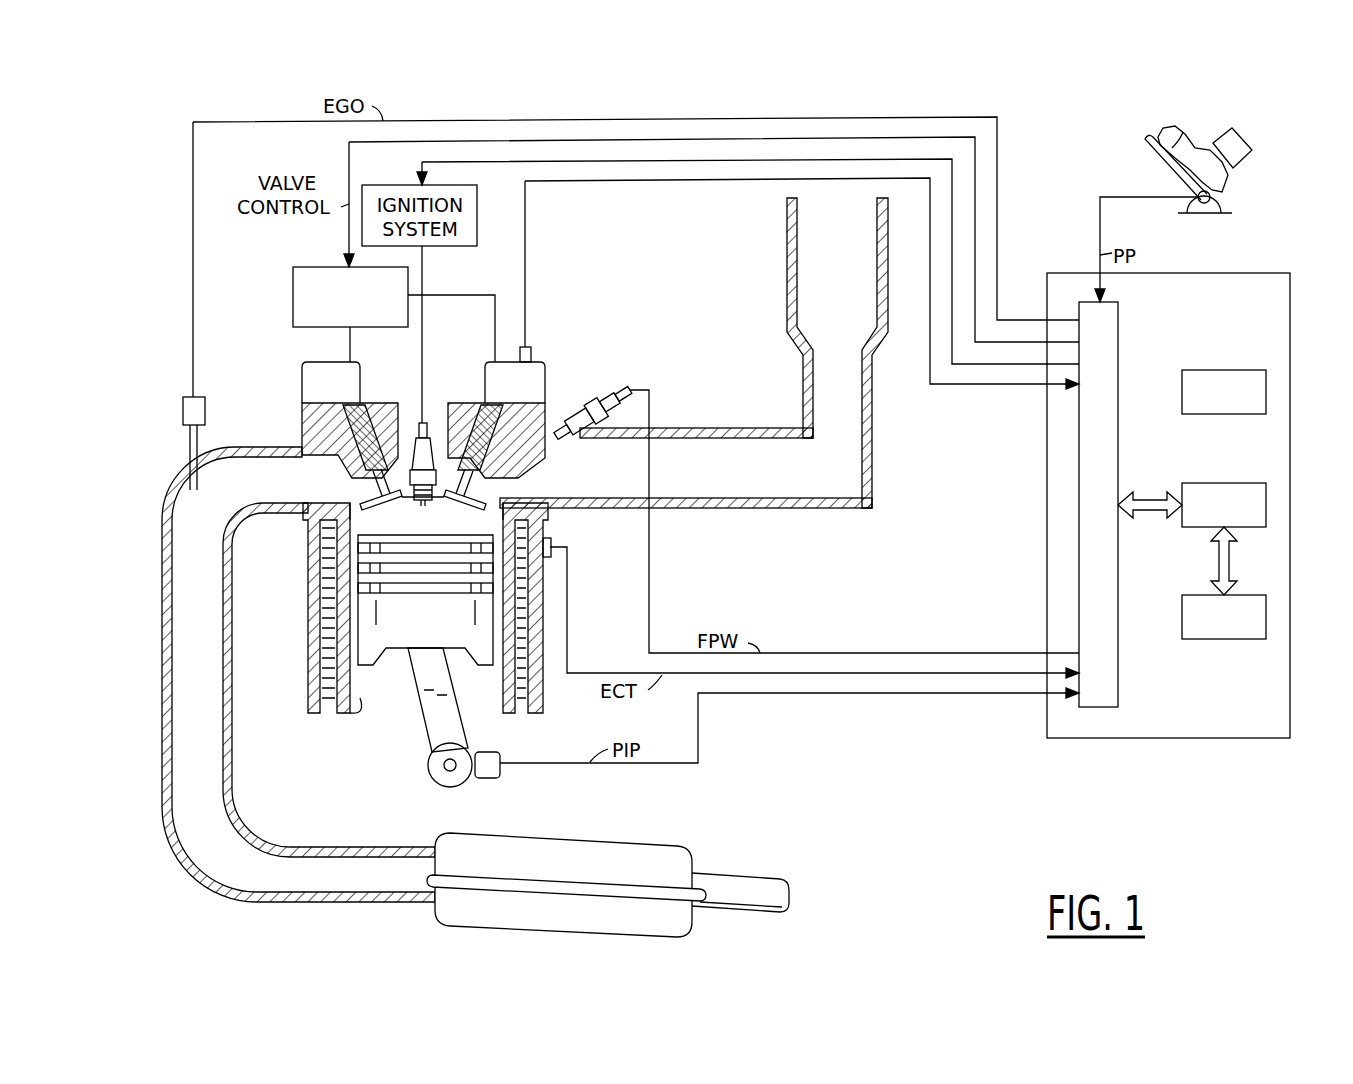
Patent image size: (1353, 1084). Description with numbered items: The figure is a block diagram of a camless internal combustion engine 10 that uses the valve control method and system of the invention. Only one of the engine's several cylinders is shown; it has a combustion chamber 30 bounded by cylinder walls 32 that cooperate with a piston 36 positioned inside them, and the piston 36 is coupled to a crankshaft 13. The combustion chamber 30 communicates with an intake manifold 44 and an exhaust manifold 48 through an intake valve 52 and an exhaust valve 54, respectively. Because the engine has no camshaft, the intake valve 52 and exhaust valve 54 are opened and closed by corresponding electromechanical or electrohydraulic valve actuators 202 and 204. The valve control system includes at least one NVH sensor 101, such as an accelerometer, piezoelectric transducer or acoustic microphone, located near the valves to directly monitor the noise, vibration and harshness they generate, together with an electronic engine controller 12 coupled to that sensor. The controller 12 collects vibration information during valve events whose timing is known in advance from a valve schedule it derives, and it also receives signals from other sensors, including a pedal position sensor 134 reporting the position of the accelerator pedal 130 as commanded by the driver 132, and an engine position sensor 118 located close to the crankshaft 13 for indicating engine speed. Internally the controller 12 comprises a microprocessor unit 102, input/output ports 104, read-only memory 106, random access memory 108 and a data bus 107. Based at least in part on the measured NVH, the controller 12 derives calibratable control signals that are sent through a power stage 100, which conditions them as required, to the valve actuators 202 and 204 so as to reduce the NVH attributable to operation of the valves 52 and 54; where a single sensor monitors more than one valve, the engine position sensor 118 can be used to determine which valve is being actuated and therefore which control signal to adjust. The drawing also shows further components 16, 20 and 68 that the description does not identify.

The camless internal combustion engine 10 is at (338, 787).
The electronic engine controller 12 is at (1166, 739).
The crankshaft 13 is at (428, 760).
The exhaust gas oxygen sensor 16 is at (184, 396).
The catalytic converter 20 is at (600, 838).
The combustion chamber 30 is at (388, 523).
The cylinder walls 32 is at (357, 702).
The piston 36 is at (408, 640).
The intake manifold 44 is at (783, 478).
The exhaust manifold 48 is at (187, 507).
The intake valve 52 is at (478, 490).
The exhaust valve 54 is at (362, 486).
The fuel injector 68 is at (620, 392).
The power stage 100 is at (293, 296).
The NVH sensor 101 is at (533, 350).
The microprocessor unit 102 is at (1226, 460).
The input/output ports 104 is at (1120, 327).
The read-only memory (ROM) 106 is at (1228, 348).
The data bus 107 is at (1155, 518).
The random access memory (RAM) 108 is at (1203, 639).
The engine position sensor 118 is at (500, 775).
The accelerator pedal 130 is at (1148, 143).
The driver 132 is at (1240, 145).
The pedal position sensor 134 is at (1222, 193).
The intake valve actuator 202 is at (553, 378).
The exhaust valve actuator 204 is at (302, 388).